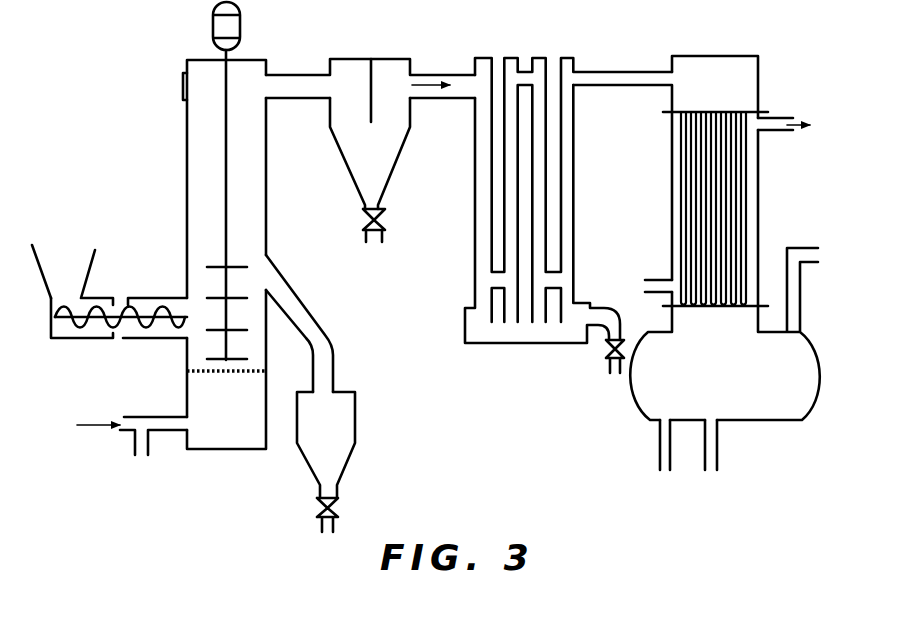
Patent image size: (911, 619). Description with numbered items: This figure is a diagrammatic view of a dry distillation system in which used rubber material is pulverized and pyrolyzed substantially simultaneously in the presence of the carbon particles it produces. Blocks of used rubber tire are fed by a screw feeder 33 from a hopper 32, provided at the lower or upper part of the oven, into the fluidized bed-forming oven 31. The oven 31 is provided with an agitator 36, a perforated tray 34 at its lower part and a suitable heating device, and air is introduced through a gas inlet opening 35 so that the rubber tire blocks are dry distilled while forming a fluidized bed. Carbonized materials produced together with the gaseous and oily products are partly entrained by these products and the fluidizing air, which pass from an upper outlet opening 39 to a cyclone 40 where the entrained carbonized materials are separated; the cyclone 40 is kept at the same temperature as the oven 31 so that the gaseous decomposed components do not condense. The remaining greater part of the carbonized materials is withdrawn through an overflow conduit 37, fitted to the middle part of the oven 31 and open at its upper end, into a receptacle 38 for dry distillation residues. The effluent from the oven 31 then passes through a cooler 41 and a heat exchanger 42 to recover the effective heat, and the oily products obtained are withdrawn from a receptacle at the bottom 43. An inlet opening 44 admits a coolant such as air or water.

The fluidized bed-forming oven 31 is at (200, 163).
The hopper 32 is at (104, 228).
The screw feeder 33 is at (147, 300).
The perforated tray 34 is at (243, 375).
The gas inlet opening 35 is at (125, 417).
The agitator 36 is at (225, 113).
The overflow conduit 37 is at (313, 310).
The receptacle for dry distillation residues 38 is at (356, 415).
The upper outlet opening 39 is at (299, 100).
The cyclone 40 is at (398, 157).
The cooler 41 is at (548, 57).
The heat exchanger 42 is at (717, 57).
The bottom 43 is at (718, 450).
The inlet opening for a coolant 44 is at (665, 286).